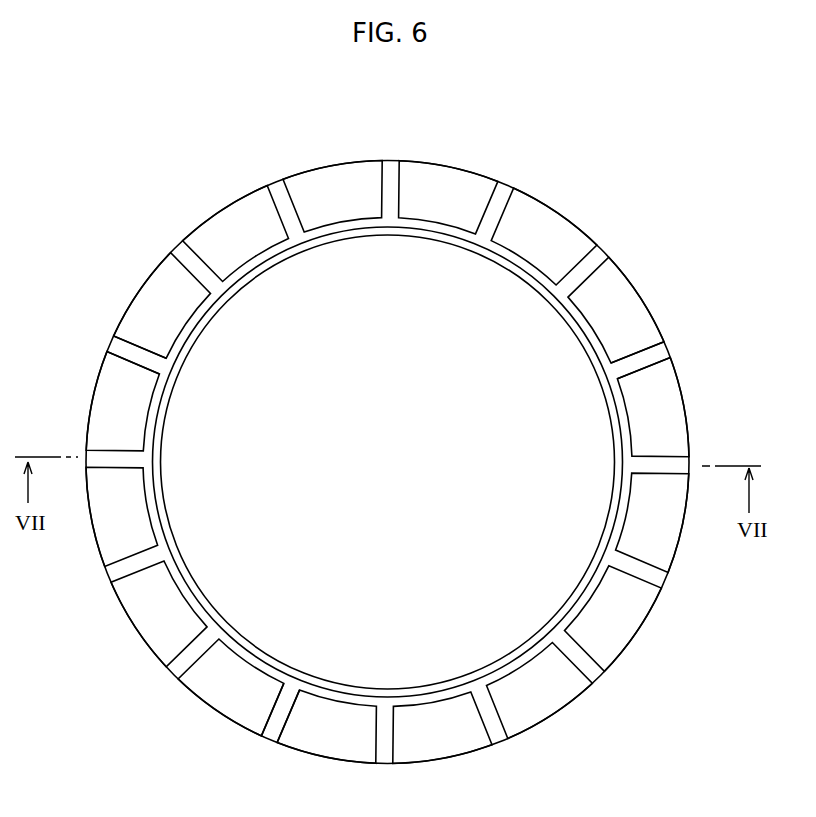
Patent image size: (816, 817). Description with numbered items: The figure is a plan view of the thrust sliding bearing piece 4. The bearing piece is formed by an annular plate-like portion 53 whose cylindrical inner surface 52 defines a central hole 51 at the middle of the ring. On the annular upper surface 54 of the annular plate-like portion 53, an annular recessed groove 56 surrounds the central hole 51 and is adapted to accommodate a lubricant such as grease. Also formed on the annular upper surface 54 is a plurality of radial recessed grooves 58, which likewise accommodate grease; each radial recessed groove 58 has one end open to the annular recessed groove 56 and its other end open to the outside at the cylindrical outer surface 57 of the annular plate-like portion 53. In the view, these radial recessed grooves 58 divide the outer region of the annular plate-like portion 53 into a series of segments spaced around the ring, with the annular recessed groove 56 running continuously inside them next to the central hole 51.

The thrust sliding bearing piece 4 is at (136, 672).
The central hole 51 is at (413, 466).
The cylindrical inner surface 52 is at (413, 690).
The annular plate-like portion 53 is at (612, 295).
The annular upper surface 54 is at (610, 628).
The annular recessed groove 56 is at (520, 265).
The cylindrical outer surface 57 is at (235, 203).
The radial recessed grooves 58 is at (133, 352).